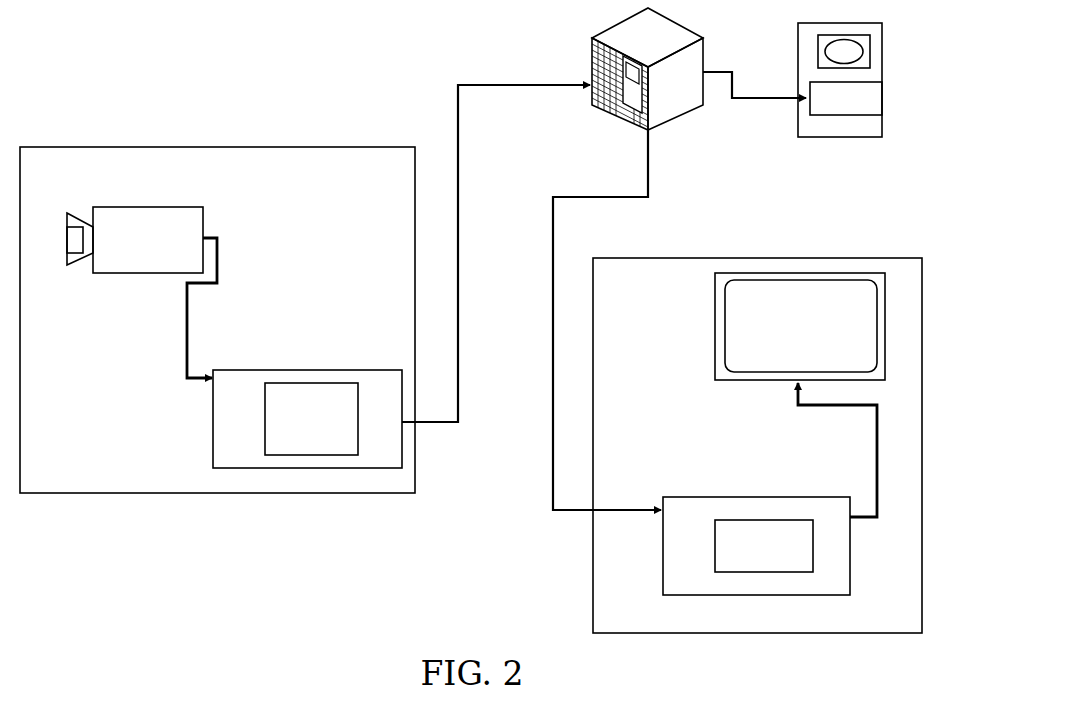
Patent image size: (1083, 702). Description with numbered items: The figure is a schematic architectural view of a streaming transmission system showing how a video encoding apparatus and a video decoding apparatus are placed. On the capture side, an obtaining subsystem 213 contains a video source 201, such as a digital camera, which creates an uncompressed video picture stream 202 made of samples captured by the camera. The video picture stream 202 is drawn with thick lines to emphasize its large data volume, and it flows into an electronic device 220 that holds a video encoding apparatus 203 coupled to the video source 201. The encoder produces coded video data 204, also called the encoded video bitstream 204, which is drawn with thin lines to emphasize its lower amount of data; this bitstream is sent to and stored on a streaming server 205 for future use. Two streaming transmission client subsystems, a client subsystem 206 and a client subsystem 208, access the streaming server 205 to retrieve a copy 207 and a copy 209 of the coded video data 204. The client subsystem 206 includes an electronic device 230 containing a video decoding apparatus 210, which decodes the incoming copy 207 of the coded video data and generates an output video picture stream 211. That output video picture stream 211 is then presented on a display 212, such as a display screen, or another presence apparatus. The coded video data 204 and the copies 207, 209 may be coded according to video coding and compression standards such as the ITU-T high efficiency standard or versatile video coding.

The video source 201 is at (150, 206).
The video picture stream 202 is at (186, 318).
The video encoding apparatus 203 is at (311, 419).
The coded video data 204 is at (457, 120).
The streaming server 205 is at (592, 63).
The client subsystem 206 is at (592, 603).
The copy of coded video data 207 is at (552, 292).
The client subsystem 208 is at (797, 52).
The copy of coded video data 209 is at (740, 100).
The video decoding apparatus 210 is at (764, 546).
The output video picture stream 211 is at (875, 470).
The display 212 is at (713, 352).
The obtaining subsystem 213 is at (245, 493).
The electronic device 220 is at (307, 394).
The electronic device 230 is at (727, 546).